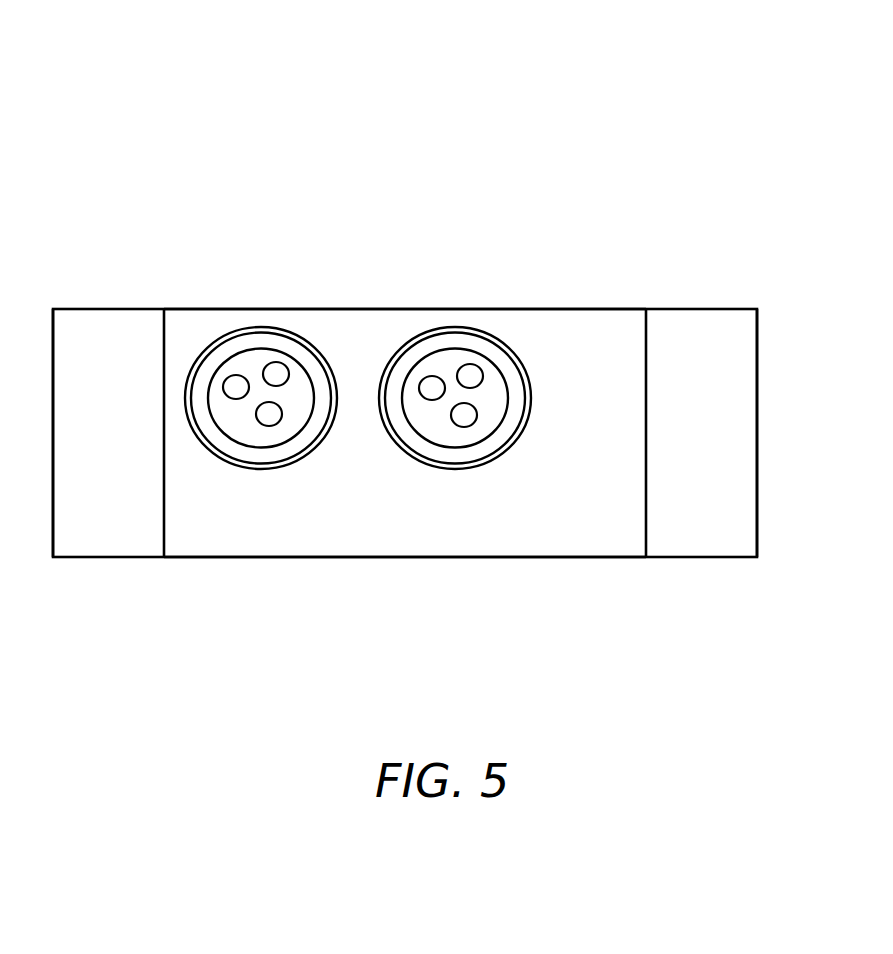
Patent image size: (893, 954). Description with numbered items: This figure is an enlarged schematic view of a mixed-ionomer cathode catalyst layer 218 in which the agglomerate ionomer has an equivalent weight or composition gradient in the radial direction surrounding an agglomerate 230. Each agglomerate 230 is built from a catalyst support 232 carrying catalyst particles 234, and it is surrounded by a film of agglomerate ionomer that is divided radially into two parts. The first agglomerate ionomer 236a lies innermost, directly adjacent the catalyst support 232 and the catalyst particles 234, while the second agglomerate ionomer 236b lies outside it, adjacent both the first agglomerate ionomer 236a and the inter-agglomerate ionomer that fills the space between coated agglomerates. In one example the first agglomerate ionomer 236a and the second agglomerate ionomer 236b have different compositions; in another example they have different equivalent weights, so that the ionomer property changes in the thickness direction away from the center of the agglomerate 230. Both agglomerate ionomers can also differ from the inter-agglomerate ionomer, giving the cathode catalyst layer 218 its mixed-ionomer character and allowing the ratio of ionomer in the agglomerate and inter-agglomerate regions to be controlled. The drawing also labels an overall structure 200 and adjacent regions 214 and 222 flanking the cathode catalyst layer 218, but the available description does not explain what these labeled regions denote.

The connector assembly 200 is at (290, 131).
The first housing section 214 is at (78, 573).
The cathode catalyst layer 218 is at (311, 575).
The second housing section 222 is at (702, 575).
The agglomerate 230 is at (254, 332).
The catalyst support 232 is at (288, 428).
The catalyst particles 234 is at (267, 426).
The first agglomerate ionomer 236a is at (212, 367).
The second agglomerate ionomer 236b is at (308, 356).